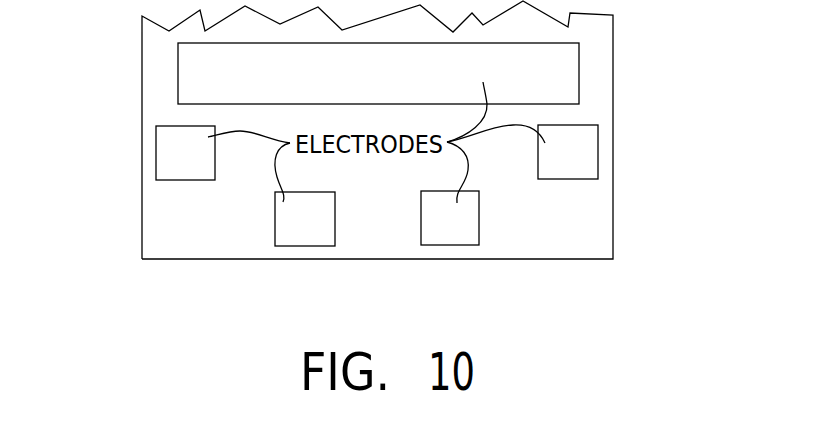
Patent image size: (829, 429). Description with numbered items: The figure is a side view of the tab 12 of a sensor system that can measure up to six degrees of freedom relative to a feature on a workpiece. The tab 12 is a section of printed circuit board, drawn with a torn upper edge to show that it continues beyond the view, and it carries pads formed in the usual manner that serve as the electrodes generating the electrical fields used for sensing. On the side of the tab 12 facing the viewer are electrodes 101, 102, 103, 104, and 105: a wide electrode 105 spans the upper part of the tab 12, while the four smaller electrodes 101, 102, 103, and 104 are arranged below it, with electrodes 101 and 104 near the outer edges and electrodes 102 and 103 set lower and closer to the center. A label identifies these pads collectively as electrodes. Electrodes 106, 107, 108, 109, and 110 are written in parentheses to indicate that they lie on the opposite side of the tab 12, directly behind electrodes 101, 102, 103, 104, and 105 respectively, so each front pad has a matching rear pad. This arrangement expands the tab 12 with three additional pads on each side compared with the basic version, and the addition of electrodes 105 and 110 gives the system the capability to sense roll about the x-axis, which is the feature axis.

The tab 12 is at (595, 55).
The electrode 101 is at (124, 178).
The electrode 102 is at (245, 259).
The electrode 103 is at (481, 261).
The electrode 104 is at (613, 178).
The electrode 105 is at (378, 73).
The electrode 106 is at (183, 153).
The electrode 107 is at (297, 225).
The electrode 108 is at (448, 217).
The electrode 109 is at (567, 153).
The electrode 110 is at (378, 73).